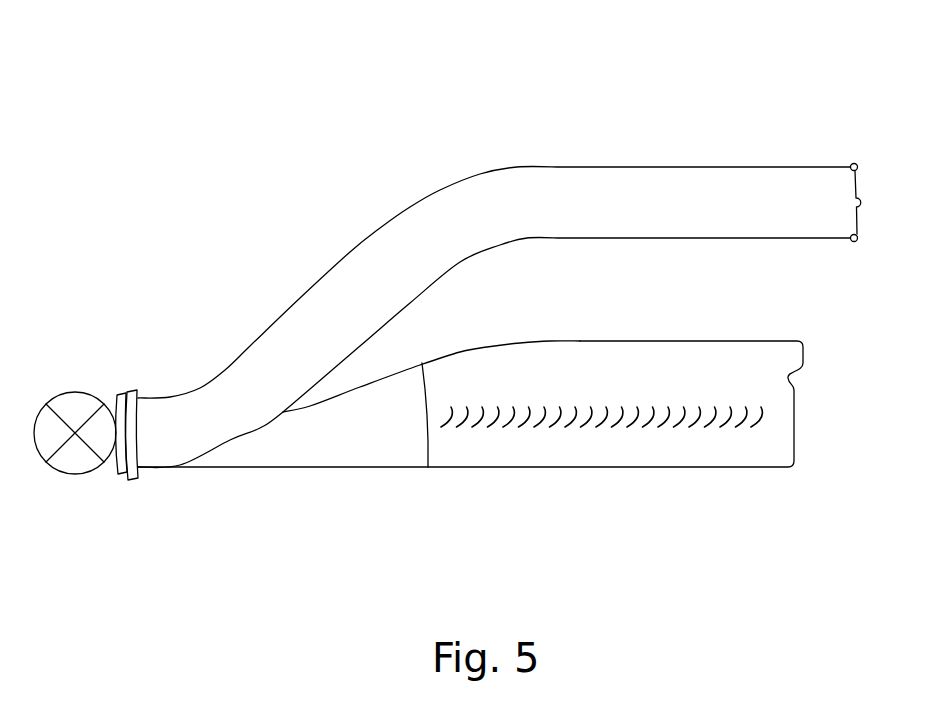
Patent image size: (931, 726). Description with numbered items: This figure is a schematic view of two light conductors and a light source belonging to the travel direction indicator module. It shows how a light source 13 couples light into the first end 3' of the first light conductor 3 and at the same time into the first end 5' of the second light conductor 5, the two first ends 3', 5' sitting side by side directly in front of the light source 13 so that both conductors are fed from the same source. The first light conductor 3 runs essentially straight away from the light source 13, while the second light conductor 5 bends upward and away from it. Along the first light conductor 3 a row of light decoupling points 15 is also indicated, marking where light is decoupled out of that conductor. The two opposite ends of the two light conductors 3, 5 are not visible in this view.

The second light conductor 5 is at (499, 278).
The first light conductor 3 is at (470, 462).
The light decoupling points 15 is at (647, 408).
The light source 13 is at (75, 463).
The first end of the second light conductor 5' is at (145, 390).
The first end of the first light conductor 3' is at (170, 474).